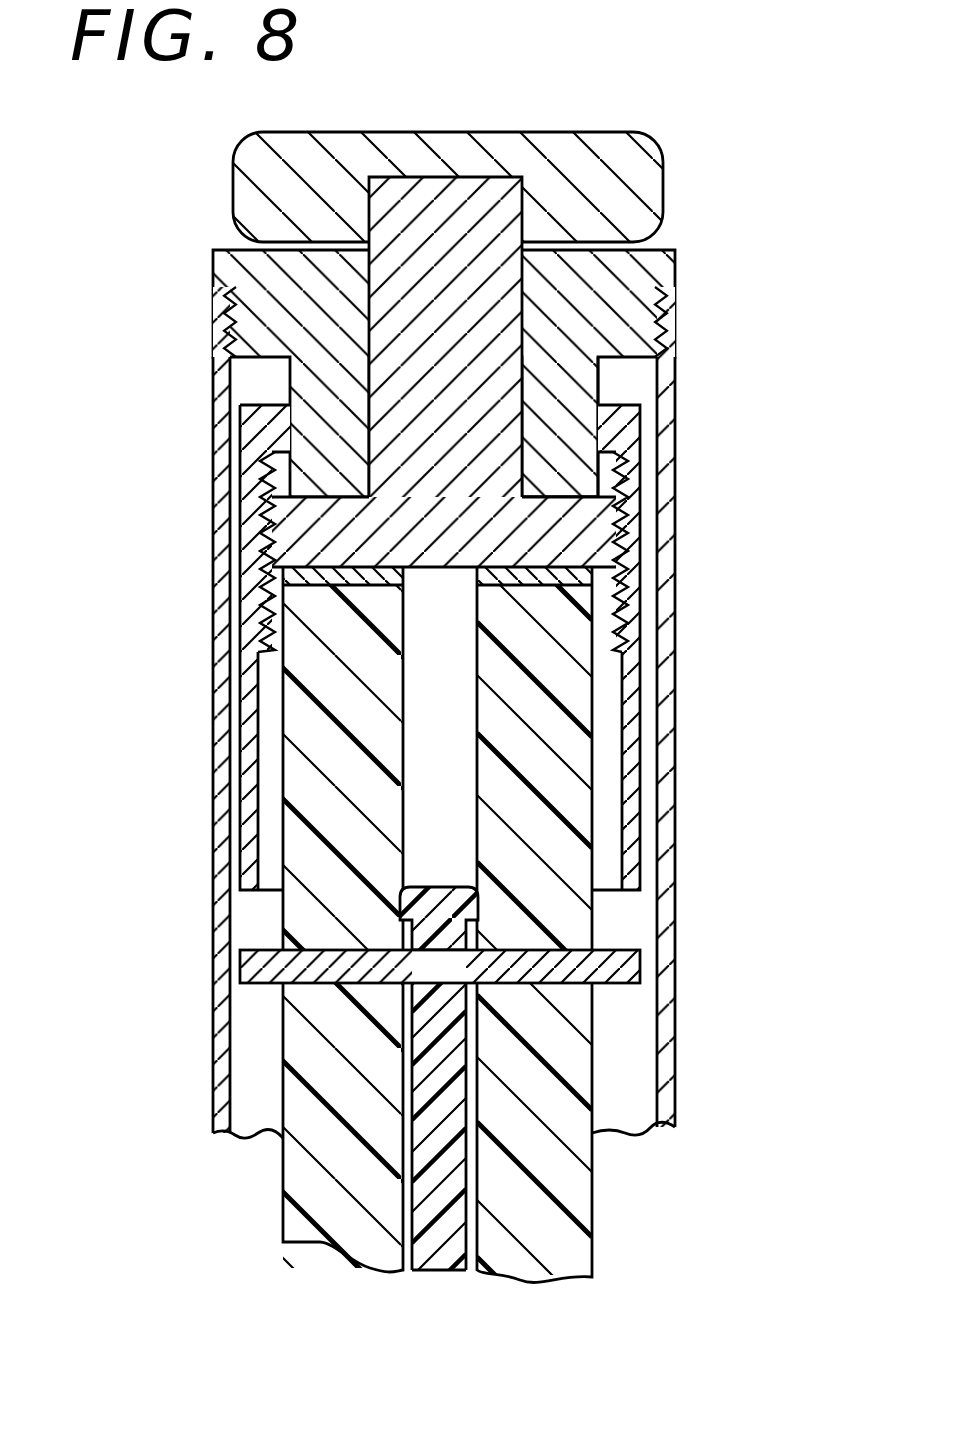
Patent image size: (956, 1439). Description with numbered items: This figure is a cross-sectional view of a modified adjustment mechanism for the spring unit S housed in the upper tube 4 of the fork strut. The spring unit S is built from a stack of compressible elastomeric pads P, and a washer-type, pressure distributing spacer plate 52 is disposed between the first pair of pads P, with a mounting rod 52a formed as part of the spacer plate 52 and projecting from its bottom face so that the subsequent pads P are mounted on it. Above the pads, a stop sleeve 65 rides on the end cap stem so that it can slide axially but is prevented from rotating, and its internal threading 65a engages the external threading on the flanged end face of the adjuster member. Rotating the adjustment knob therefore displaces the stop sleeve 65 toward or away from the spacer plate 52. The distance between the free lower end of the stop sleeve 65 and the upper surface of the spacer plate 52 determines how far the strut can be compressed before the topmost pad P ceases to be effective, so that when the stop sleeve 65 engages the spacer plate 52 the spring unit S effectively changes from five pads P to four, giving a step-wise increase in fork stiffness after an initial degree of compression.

The stop sleeve 65 is at (258, 420).
The internal threading 65a is at (260, 643).
The upper tube 4 is at (678, 533).
The pad P is at (573, 923).
The spacer plate 52 is at (257, 952).
The mounting rod 52a is at (432, 1248).
The spring unit S is at (250, 1172).